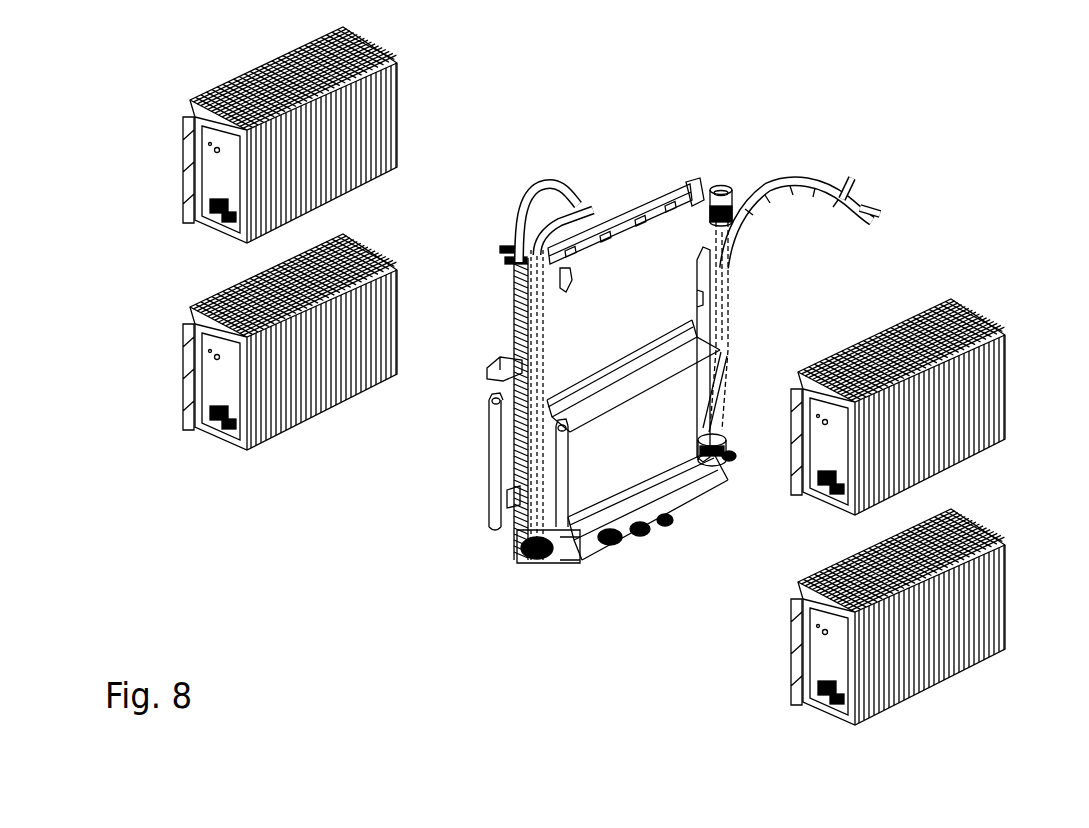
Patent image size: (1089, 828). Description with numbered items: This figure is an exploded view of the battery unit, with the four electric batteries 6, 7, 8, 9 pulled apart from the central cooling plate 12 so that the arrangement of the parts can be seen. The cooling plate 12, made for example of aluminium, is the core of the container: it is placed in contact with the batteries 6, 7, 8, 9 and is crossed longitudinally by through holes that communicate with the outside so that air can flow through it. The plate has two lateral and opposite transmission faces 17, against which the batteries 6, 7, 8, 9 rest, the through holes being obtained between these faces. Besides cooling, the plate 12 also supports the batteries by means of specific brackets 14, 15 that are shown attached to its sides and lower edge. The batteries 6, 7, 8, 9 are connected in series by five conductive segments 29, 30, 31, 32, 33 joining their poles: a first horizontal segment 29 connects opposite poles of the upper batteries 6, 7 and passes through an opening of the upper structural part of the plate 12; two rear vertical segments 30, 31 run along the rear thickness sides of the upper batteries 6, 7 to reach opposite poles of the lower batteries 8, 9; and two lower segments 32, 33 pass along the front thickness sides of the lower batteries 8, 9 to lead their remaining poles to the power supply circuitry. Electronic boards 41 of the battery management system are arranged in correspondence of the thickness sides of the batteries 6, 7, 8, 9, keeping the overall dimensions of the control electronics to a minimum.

The electric battery 6 is at (924, 407).
The electric battery 7 is at (167, 37).
The electric battery 8 is at (924, 617).
The electric battery 9 is at (290, 358).
The cooling plate 12 is at (702, 178).
The bracket 14 is at (500, 362).
The bracket 15 is at (683, 490).
The transmission face 17 is at (642, 310).
The first conductive segment 29 is at (518, 198).
The rear vertical conductive segment 30 is at (723, 263).
The rear vertical conductive segment 31 is at (637, 197).
The lower conductive segment 32 is at (573, 548).
The lower conductive segment 33 is at (495, 452).
The electronic board 41 is at (489, 420).